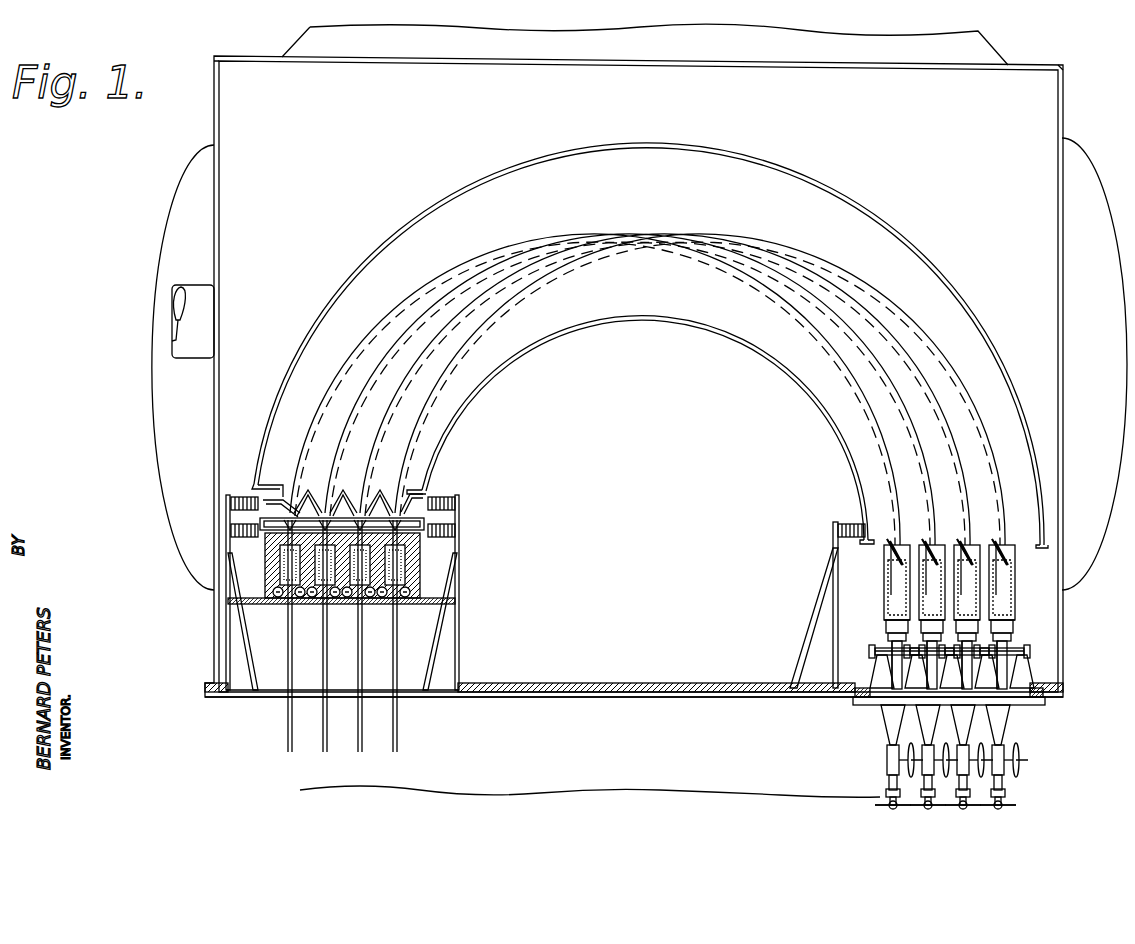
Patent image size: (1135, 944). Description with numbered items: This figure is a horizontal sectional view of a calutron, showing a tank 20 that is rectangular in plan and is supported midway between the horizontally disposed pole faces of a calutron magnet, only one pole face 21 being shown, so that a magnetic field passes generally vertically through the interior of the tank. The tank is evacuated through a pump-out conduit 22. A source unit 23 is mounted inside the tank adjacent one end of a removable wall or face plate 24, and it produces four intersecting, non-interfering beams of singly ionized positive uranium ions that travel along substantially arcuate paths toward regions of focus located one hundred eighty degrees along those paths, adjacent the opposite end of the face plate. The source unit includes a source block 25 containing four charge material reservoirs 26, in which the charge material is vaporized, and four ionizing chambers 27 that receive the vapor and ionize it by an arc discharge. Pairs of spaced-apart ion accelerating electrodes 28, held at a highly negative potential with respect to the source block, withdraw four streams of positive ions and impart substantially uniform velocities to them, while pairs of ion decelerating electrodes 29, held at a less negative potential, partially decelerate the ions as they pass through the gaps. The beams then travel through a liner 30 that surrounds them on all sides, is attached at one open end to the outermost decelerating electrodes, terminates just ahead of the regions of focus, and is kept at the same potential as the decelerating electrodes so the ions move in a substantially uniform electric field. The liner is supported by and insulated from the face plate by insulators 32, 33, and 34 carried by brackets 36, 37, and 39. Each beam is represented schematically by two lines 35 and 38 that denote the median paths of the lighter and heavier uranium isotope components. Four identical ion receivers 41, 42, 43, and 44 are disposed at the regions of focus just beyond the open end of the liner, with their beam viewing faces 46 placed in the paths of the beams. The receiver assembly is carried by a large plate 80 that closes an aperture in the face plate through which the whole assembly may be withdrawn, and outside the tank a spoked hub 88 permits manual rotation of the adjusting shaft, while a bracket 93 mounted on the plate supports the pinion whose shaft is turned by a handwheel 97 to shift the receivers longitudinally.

The tank 20 is at (209, 452).
The pole face 21 is at (180, 234).
The pump-out conduit 22 is at (178, 343).
The source unit 23 is at (428, 620).
The face plate 24 is at (658, 692).
The source block 25 is at (415, 578).
The charge material reservoirs 26 is at (420, 564).
The ionizing chambers 27 is at (420, 545).
The ion accelerating electrodes 28 is at (425, 521).
The ion decelerating electrodes 29 is at (410, 512).
The liner 30 is at (530, 355).
The insulator 32 is at (285, 497).
The insulator 33 is at (455, 500).
The insulator 34 is at (843, 524).
The median path line 35 is at (880, 300).
The bracket 36 is at (228, 573).
The bracket 37 is at (458, 610).
The median path line 38 is at (928, 340).
The bracket 39 is at (833, 570).
The ion receiver 41 is at (877, 613).
The ion receiver 42 is at (950, 650).
The ion receiver 43 is at (1010, 648).
The ion receiver 44 is at (1030, 623).
The beam viewing face 46 is at (1000, 552).
The plate 80 is at (858, 705).
The spoked hub 88 is at (1020, 805).
The bracket 93 is at (1020, 724).
The handwheel 97 is at (1020, 758).